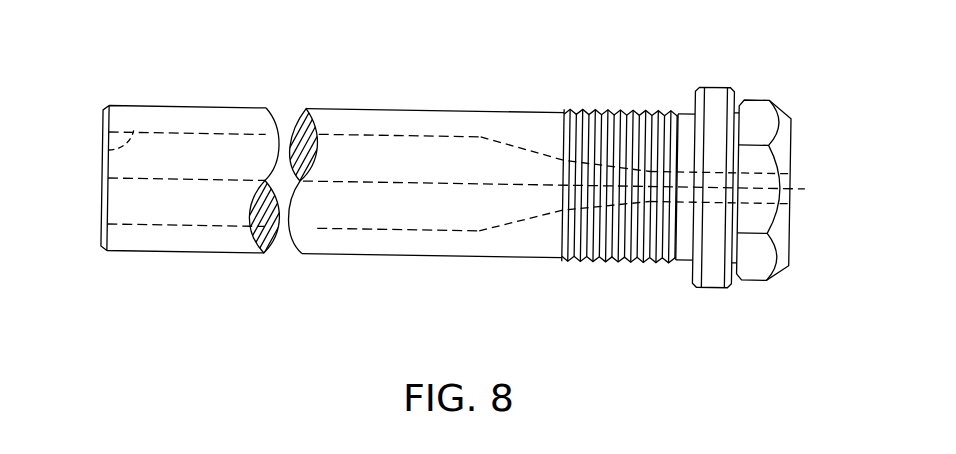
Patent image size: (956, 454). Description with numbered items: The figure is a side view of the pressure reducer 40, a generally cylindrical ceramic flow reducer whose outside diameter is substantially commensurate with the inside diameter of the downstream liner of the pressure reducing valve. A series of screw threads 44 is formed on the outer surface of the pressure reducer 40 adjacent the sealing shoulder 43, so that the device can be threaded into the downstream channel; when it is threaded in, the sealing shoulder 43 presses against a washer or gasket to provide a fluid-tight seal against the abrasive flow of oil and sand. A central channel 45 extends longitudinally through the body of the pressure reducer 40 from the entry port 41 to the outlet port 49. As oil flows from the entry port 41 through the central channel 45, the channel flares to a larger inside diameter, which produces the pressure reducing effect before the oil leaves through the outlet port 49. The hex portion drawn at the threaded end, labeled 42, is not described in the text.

The pressure reducer 40 is at (655, 80).
The entry port 41 is at (793, 199).
The hex nut 42 is at (735, 289).
The sealing shoulder 43 is at (700, 292).
The screw threads 44 is at (616, 268).
The central channel 45 is at (558, 158).
The outlet port 49 is at (106, 150).